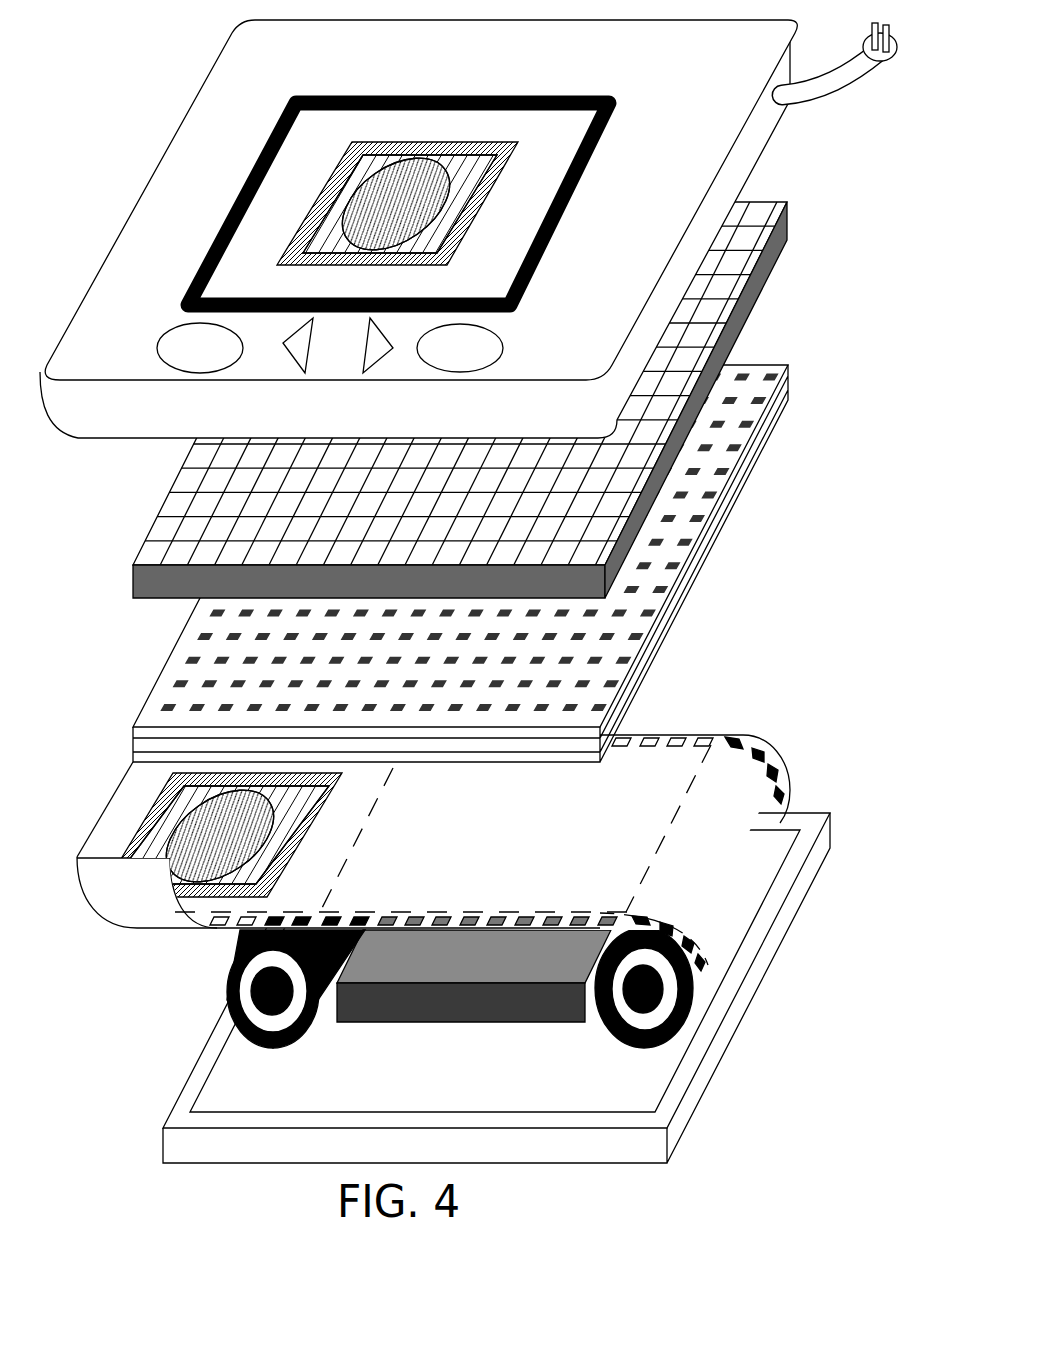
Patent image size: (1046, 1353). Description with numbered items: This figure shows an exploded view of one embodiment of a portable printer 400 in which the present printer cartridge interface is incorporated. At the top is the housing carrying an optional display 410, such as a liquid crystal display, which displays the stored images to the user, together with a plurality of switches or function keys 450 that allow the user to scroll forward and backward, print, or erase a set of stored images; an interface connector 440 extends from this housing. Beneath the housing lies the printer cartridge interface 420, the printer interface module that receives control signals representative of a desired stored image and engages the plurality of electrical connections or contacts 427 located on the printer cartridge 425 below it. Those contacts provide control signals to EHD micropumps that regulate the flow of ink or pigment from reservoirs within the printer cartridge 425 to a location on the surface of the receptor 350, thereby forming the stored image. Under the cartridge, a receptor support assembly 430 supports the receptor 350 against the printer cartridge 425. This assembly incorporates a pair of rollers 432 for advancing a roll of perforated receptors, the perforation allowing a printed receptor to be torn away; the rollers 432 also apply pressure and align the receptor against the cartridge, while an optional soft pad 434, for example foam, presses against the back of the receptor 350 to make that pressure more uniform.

The portable printer 400 is at (154, 85).
The display 410 is at (446, 229).
The printer cartridge interface 420 is at (667, 380).
The printer cartridge 425 is at (480, 563).
The electrical connections or contacts 427 is at (653, 590).
The receptor support assembly 430 is at (537, 1060).
The rollers 432 is at (663, 987).
The soft pad 434 is at (357, 1022).
The interface connector 440 is at (840, 100).
The function keys 450 is at (157, 346).
The receptor 350 is at (740, 800).